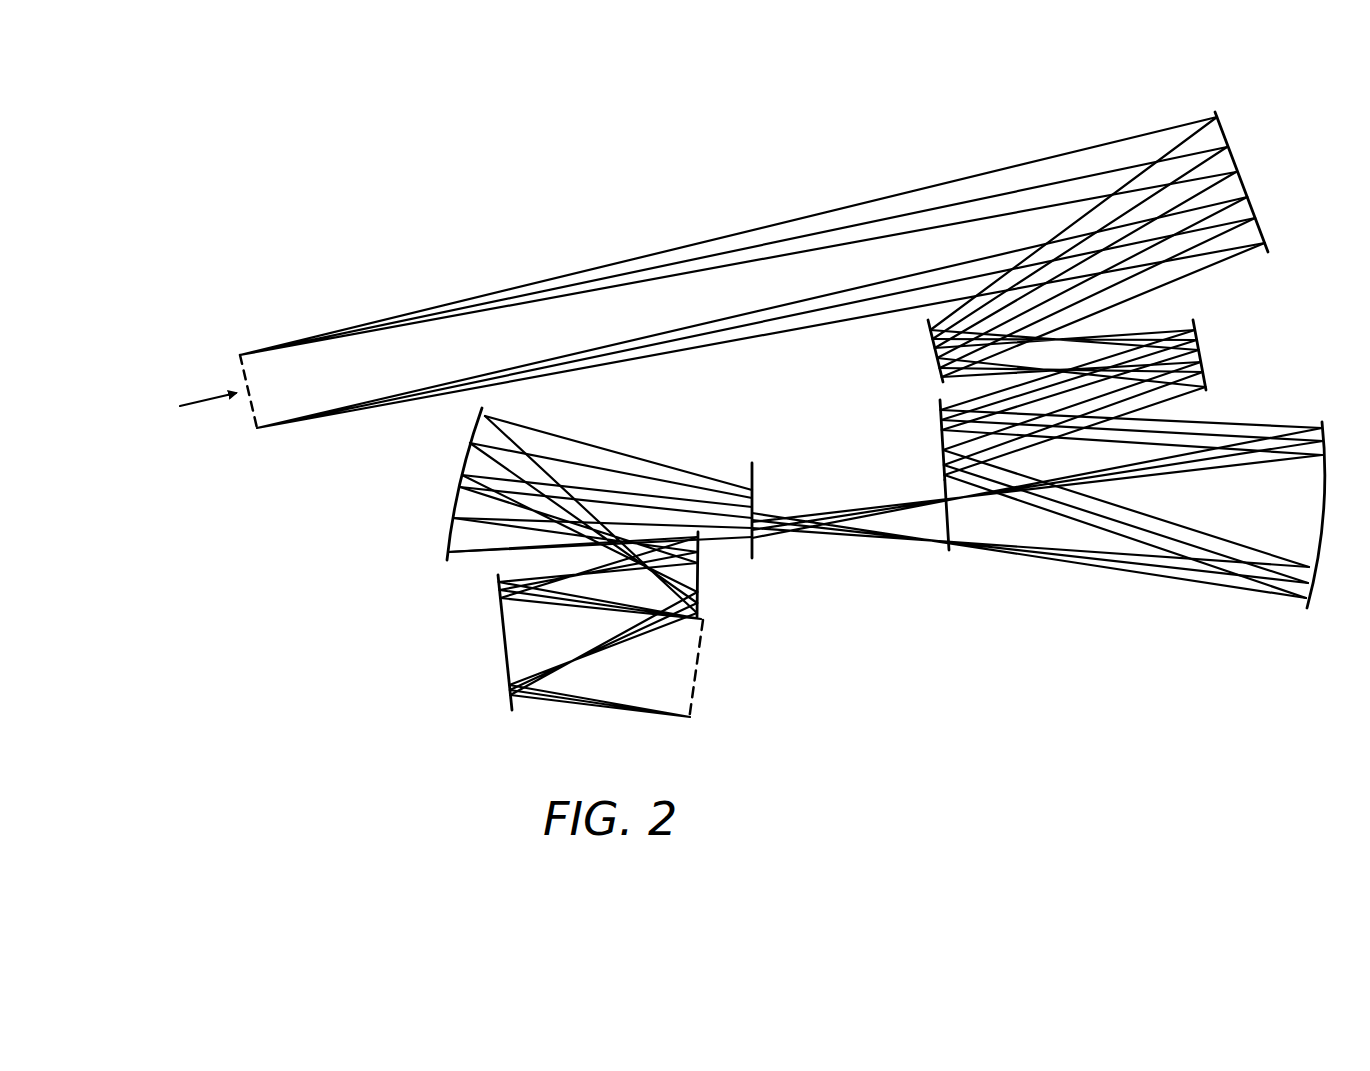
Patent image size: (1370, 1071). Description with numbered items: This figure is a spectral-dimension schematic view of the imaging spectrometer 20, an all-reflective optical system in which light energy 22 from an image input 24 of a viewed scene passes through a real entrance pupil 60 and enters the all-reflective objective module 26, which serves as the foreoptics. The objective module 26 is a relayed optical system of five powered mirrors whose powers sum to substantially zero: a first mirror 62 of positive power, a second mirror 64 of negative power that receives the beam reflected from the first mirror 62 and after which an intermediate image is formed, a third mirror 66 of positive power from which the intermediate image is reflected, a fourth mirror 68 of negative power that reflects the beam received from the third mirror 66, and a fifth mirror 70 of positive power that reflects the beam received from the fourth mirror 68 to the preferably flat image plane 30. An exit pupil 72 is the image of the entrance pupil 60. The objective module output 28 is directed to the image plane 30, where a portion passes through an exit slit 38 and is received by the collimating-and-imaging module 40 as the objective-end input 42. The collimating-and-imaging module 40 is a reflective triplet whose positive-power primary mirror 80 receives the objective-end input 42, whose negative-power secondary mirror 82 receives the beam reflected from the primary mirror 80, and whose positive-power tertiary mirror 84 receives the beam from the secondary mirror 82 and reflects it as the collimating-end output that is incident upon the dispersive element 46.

The imaging spectrometer 20 is at (384, 208).
The light energy 22 is at (208, 400).
The image input 24 is at (128, 380).
The objective module 26 is at (1276, 272).
The objective module output 28 is at (838, 542).
The image plane 30 is at (754, 478).
The exit slit 38 is at (750, 528).
The collimating-and-imaging module 40 is at (636, 446).
The objective-end input 42 is at (696, 470).
The dispersive element 46 is at (704, 664).
The entrance pupil 60 is at (239, 367).
The first mirror 62 is at (1240, 107).
The second mirror 64 is at (927, 350).
The third mirror 66 is at (1208, 360).
The fourth mirror 68 is at (940, 437).
The fifth mirror 70 is at (1316, 558).
The exit pupil 72 is at (950, 522).
The primary mirror 80 is at (448, 496).
The secondary mirror 82 is at (700, 578).
The tertiary mirror 84 is at (500, 641).